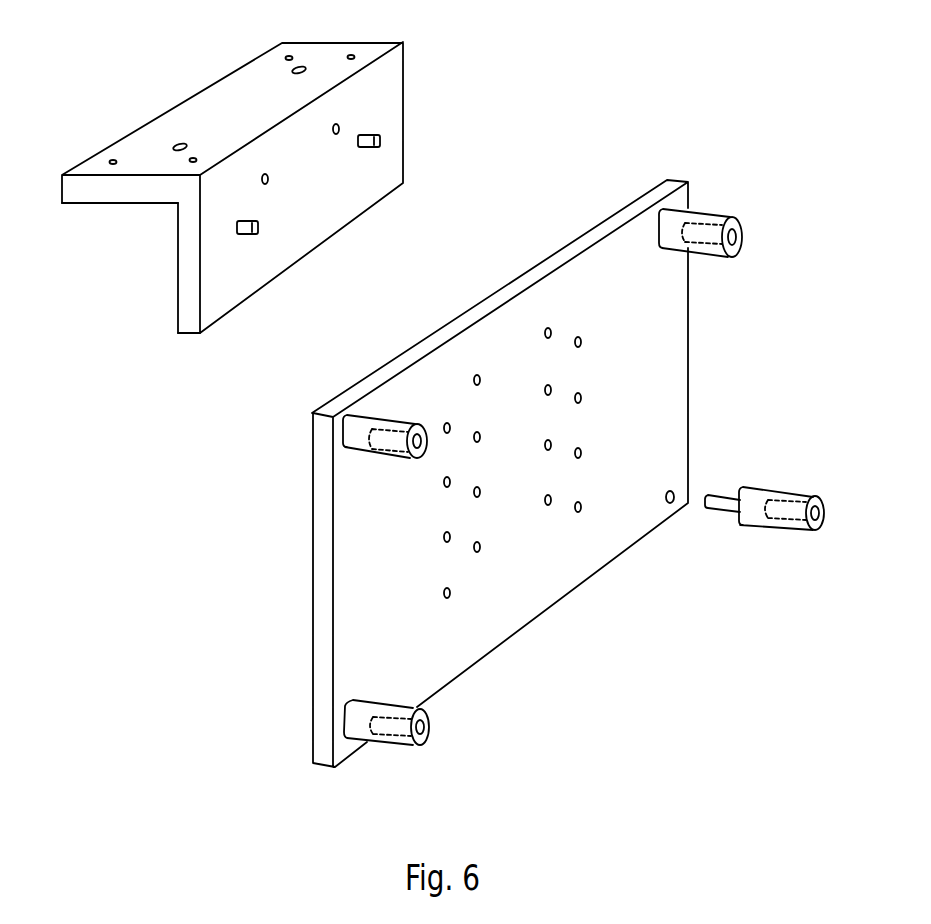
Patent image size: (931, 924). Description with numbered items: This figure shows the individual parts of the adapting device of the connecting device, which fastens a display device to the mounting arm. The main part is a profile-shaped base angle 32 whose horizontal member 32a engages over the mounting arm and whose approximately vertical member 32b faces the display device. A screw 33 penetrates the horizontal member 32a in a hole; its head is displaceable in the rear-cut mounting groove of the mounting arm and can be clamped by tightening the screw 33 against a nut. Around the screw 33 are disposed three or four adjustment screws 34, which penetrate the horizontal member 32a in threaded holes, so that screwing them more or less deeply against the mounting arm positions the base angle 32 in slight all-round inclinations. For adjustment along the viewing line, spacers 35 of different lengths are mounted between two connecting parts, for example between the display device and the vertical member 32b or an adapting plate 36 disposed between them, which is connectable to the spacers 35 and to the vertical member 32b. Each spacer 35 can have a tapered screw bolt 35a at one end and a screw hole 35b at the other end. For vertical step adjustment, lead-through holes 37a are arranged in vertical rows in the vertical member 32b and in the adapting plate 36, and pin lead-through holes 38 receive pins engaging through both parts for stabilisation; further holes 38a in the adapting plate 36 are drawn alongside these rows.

The base angle 32 is at (177, 218).
The horizontal member 32a is at (98, 205).
The vertical member 32b is at (183, 333).
The screw 33 is at (176, 147).
The adjustment screws 34 is at (110, 162).
The spacers 35 is at (398, 418).
The tapered screw bolt 35a is at (717, 510).
The screw hole 35b is at (821, 526).
The adapting plate 36 is at (312, 630).
The lead-through holes 37a is at (338, 127).
The pin lead-through holes 38 is at (246, 235).
The holes 38a is at (444, 537).